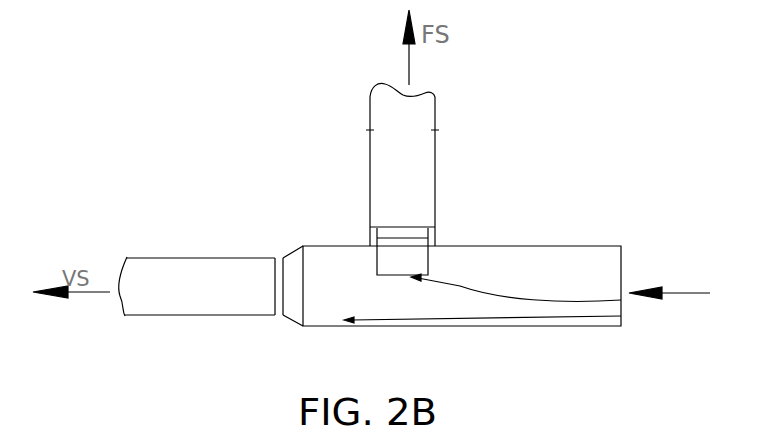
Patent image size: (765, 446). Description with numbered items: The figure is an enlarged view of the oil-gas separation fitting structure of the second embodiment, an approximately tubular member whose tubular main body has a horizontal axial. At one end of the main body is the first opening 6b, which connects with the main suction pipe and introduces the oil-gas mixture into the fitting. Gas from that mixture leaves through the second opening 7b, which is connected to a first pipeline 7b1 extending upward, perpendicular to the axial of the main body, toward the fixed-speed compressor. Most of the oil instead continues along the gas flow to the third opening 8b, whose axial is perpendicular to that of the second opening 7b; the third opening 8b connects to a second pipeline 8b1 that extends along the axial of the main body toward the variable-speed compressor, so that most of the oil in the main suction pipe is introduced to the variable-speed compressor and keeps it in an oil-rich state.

The first opening 6b is at (606, 276).
The second opening 7b is at (438, 236).
The first pipeline 7b1 is at (390, 247).
The third opening 8b is at (276, 262).
The second pipeline 8b1 is at (245, 303).